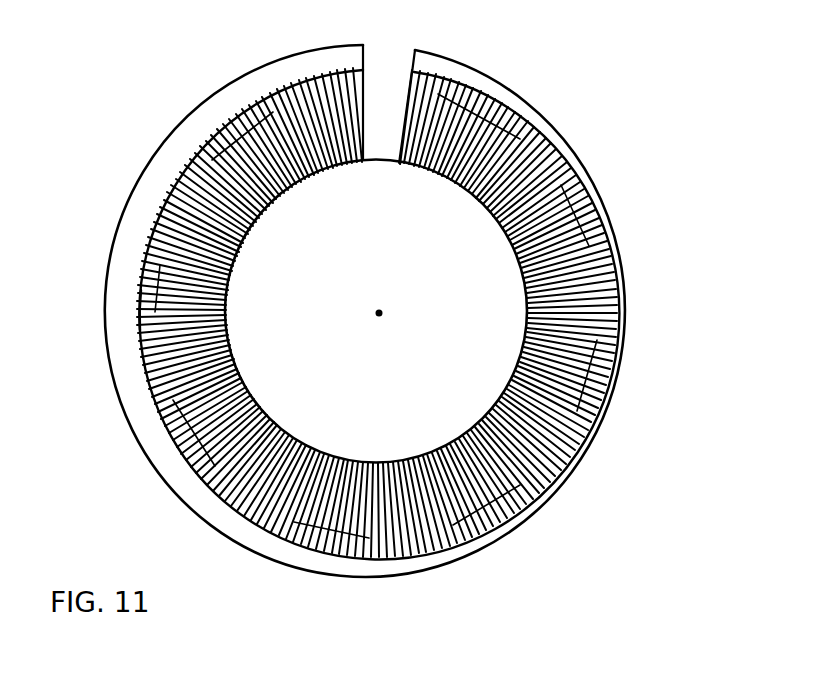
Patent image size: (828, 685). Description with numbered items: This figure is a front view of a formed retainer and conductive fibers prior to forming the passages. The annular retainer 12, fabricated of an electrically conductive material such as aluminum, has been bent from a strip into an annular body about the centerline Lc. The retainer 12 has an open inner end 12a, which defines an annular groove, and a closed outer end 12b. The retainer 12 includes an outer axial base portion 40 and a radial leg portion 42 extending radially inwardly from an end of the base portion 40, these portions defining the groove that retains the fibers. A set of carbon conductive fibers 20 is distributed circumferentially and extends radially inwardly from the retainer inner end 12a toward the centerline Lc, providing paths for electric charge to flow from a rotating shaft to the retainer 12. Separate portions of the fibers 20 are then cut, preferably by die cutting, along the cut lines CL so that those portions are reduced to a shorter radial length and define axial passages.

The annular retainer 12 is at (397, 312).
The open inner end 12a is at (532, 138).
The closed outer end 12b is at (503, 84).
The conductive fibers 20 is at (287, 183).
The outer axial base portion 40 is at (166, 98).
The radial leg portion 42 is at (627, 303).
The cut lines CL is at (233, 113).
The centerline Lc is at (379, 310).